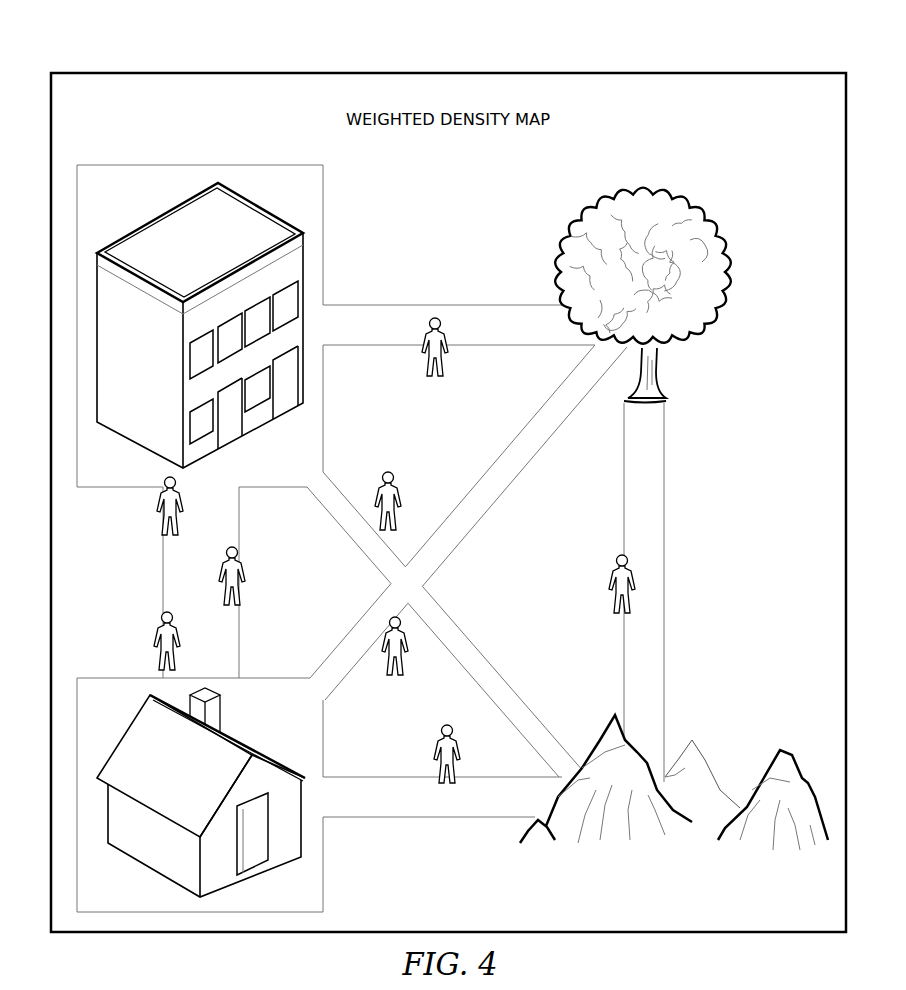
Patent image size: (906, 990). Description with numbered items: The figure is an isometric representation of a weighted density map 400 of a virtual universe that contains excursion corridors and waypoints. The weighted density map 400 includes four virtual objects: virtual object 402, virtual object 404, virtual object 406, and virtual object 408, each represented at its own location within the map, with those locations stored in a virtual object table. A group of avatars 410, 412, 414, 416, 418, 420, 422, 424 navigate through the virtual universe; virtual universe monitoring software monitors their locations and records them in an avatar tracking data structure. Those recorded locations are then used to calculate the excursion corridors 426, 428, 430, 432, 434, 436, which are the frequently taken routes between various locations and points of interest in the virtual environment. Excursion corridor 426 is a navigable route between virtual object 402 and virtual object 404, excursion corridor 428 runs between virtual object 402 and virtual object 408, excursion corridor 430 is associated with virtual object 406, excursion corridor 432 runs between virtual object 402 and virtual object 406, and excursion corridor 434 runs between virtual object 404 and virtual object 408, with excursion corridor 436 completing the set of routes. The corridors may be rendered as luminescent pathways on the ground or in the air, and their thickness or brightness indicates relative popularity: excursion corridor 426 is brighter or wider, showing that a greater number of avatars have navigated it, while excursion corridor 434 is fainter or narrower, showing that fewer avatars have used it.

The weighted density map 400 is at (334, 66).
The virtual object 402 is at (196, 257).
The virtual object 404 is at (161, 782).
The virtual object 406 is at (692, 742).
The virtual object 408 is at (683, 193).
The avatar 410 is at (427, 362).
The avatar 412 is at (397, 480).
The avatar 414 is at (404, 675).
The avatar 416 is at (437, 745).
The avatar 418 is at (612, 576).
The avatar 420 is at (151, 637).
The avatar 422 is at (248, 573).
The avatar 424 is at (157, 508).
The excursion corridor 426 is at (163, 580).
The excursion corridor 428 is at (480, 305).
The excursion corridor 430 is at (665, 483).
The excursion corridor 432 is at (503, 673).
The excursion corridor 434 is at (502, 487).
The excursion corridor 436 is at (437, 818).